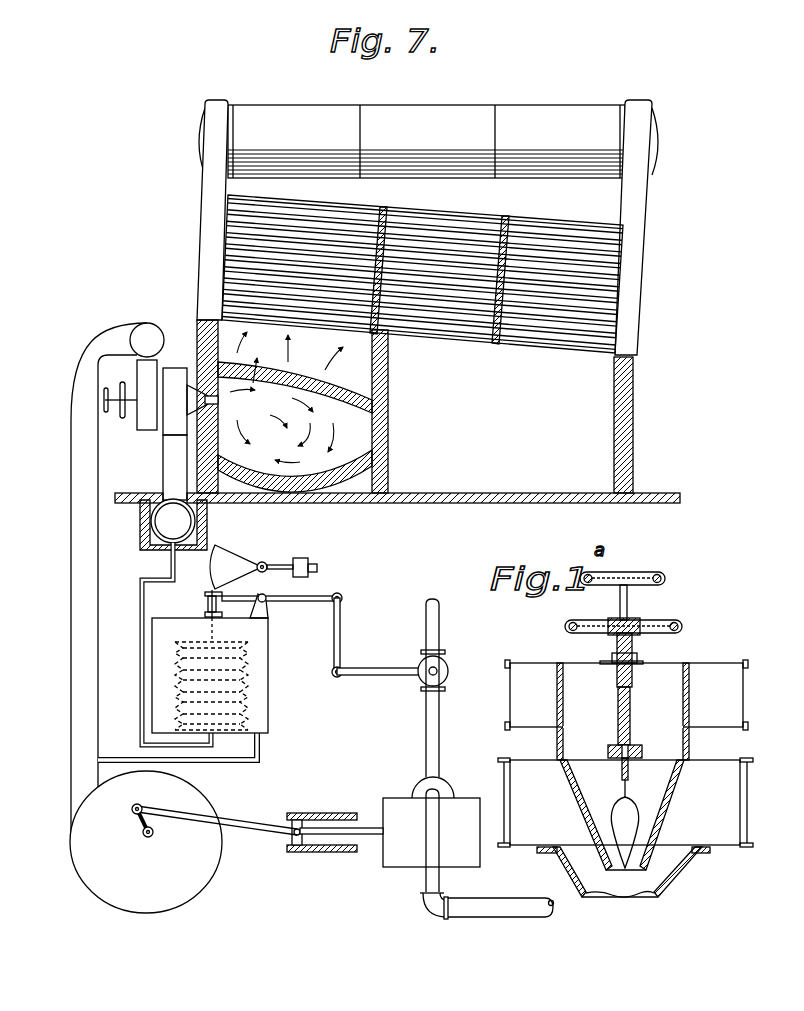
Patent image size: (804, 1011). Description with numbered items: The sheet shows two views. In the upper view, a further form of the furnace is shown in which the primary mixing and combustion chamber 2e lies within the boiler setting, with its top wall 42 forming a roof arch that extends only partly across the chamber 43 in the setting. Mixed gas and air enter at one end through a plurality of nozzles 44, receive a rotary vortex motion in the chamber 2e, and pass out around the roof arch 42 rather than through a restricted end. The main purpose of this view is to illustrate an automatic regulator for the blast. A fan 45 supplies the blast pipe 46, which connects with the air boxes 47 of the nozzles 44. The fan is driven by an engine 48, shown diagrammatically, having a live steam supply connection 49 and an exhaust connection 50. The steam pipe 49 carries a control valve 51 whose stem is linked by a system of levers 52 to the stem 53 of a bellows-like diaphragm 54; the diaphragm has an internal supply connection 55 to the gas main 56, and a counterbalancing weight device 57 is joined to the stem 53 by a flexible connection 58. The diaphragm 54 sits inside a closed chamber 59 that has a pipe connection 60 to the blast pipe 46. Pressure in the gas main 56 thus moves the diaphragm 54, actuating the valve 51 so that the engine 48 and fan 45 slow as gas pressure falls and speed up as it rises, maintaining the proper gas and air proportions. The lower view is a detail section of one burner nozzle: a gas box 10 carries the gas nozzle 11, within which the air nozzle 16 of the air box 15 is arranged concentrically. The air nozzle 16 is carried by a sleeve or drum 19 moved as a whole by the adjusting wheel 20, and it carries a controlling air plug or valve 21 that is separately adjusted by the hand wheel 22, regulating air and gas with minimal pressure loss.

In FIG. 7, the top wall 42 is at (306, 382).
In FIG. 7, the chamber in the setting 43 is at (350, 373).
In FIG. 7, the nozzles 44 is at (210, 400).
In FIG. 7, the fan 45 is at (183, 842).
In FIG. 7, the blast pipe 46 is at (130, 330).
In FIG. 7, the air boxes 47 is at (172, 378).
In FIG. 7, the engine 48 is at (372, 822).
In FIG. 7, the live steam supply connection 49 is at (430, 737).
In FIG. 7, the exhaust connection 50 is at (512, 909).
In FIG. 7, the control valve 51 is at (446, 667).
In FIG. 7, the system of levers 52 is at (360, 668).
In FIG. 7, the stem 53 is at (206, 606).
In FIG. 7, the bellows-like diaphragm 54 is at (248, 672).
In FIG. 7, the internal supply connection 55 is at (140, 632).
In FIG. 7, the gas main 56 is at (162, 528).
In FIG. 7, the counterbalancing weight device 57 is at (284, 563).
In FIG. 7, the flexible connection 58 is at (221, 570).
In FIG. 7, the closed chamber 59 is at (260, 699).
In FIG. 7, the pipe connection 60 is at (254, 762).
In FIG. 7, the primary mixing and combustion chamber 2e is at (297, 397).
In FIG. 1A, the hand wheel 22 is at (665, 575).
In FIG. 1A, the adjusting wheel 20 is at (682, 626).
In FIG. 1A, the air box 15 is at (626, 706).
In FIG. 1A, the sleeve or drum 19 is at (690, 741).
In FIG. 1A, the gas box 10 is at (625, 802).
In FIG. 1A, the air nozzle 16 is at (582, 811).
In FIG. 1A, the controlling air plug or valve 21 is at (633, 833).
In FIG. 1A, the gas nozzle 11 is at (663, 873).